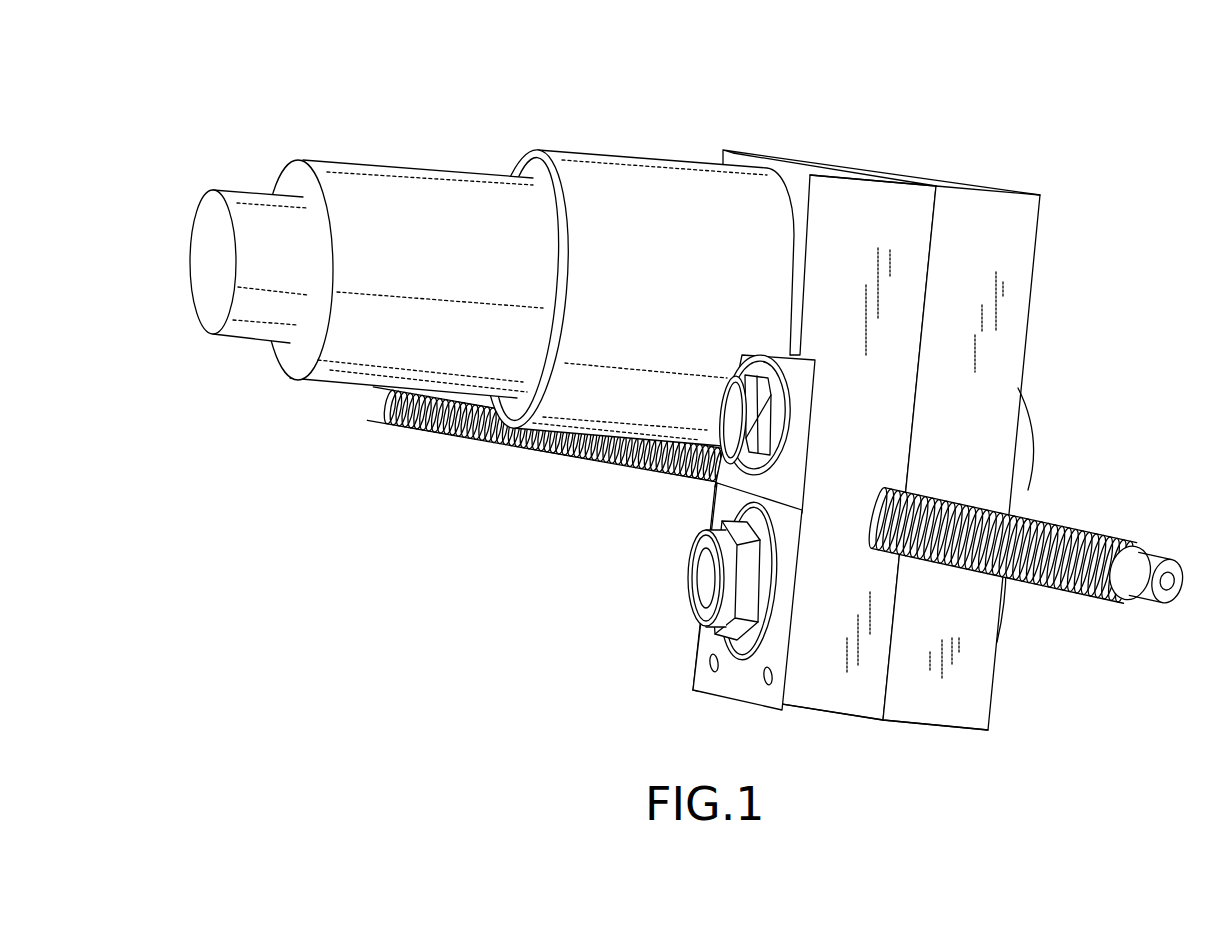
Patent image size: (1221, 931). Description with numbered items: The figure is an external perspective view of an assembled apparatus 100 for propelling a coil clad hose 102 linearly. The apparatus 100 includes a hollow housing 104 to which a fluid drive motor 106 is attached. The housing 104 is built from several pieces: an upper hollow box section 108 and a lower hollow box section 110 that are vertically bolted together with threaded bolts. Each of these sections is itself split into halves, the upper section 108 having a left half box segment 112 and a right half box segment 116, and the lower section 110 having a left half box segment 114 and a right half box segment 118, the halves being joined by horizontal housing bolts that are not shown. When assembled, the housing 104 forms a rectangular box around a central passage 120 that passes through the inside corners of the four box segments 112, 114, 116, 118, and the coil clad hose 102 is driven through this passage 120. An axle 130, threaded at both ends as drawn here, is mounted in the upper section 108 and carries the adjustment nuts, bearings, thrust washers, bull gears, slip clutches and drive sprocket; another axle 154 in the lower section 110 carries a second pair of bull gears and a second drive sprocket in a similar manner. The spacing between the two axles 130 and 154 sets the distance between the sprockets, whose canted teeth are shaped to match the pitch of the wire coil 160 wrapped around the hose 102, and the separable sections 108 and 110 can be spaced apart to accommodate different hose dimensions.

The apparatus 100 is at (996, 106).
The coil clad hose 102 is at (1102, 608).
The housing 104 is at (927, 410).
The fluid drive motor 106 is at (585, 122).
The upper hollow box section 108 is at (1045, 214).
The lower hollow box section 110 is at (1005, 713).
The left half box segment 112 is at (825, 165).
The left half box segment 114 is at (730, 690).
The right half box segment 116 is at (1027, 287).
The right half box segment 118 is at (988, 670).
The central passage 120 is at (1035, 514).
The axle 130 is at (730, 432).
The axle 154 is at (703, 580).
The coil 160 is at (1104, 537).